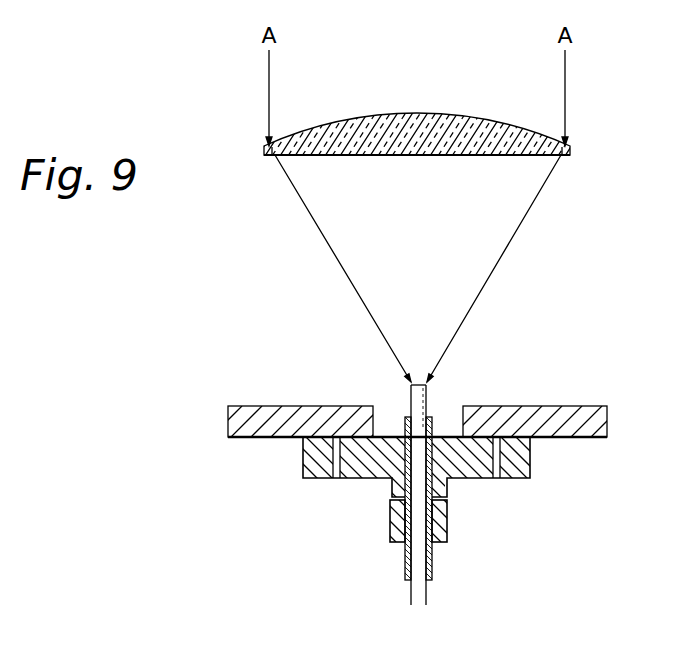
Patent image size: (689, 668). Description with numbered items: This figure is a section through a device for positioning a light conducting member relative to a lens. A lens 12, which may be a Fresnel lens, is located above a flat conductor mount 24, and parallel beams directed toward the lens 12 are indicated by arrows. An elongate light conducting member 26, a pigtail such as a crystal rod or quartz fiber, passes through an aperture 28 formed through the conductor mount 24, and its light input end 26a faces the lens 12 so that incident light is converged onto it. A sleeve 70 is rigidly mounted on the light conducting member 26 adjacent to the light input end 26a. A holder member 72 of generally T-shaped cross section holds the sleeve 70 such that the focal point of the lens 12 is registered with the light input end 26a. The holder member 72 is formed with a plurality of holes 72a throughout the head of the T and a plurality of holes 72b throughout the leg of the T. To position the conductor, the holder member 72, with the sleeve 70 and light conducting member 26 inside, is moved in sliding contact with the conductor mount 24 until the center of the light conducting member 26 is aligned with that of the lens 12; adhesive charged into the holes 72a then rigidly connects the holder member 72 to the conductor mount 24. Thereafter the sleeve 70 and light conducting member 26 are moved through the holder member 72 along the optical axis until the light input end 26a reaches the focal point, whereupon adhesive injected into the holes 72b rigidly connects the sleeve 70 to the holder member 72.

The lens 12 is at (507, 121).
The conductor mount 24 is at (537, 411).
The light conducting member 26 is at (424, 403).
The light input end 26a is at (418, 376).
The aperture 28 is at (391, 411).
The sleeve 70 is at (434, 428).
The holder member 72 is at (527, 456).
The holes in head of T 72a is at (337, 479).
The holes in leg of T 72b is at (390, 502).